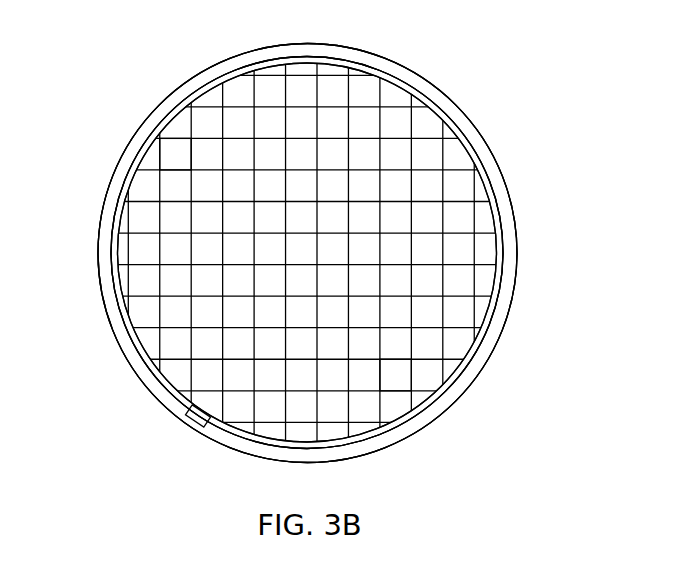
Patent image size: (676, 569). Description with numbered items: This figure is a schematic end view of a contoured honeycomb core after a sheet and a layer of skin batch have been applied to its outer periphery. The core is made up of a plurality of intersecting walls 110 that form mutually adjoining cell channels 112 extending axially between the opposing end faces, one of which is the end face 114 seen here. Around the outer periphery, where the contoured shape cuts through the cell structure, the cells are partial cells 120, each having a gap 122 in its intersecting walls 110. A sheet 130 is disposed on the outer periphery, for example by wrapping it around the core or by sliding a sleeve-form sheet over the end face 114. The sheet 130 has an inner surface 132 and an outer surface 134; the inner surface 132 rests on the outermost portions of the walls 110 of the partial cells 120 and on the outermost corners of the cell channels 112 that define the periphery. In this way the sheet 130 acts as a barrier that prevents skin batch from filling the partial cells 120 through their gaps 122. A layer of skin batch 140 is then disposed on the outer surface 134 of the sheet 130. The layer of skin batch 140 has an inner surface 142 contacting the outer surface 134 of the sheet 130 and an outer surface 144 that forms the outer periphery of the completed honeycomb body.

The intersecting walls 110 is at (212, 104).
The cell channels 112 is at (177, 147).
The end face 114 is at (405, 383).
The partial cell 120 is at (168, 378).
The gap 122 is at (195, 425).
The sheet 130 is at (418, 90).
The inner surface of sheet 132 is at (468, 153).
The outer surface of sheet 134 is at (507, 227).
The layer of skin batch 140 is at (133, 153).
The inner surface of skin batch layer 142 is at (105, 221).
The outer surface of skin batch layer 144 is at (97, 273).